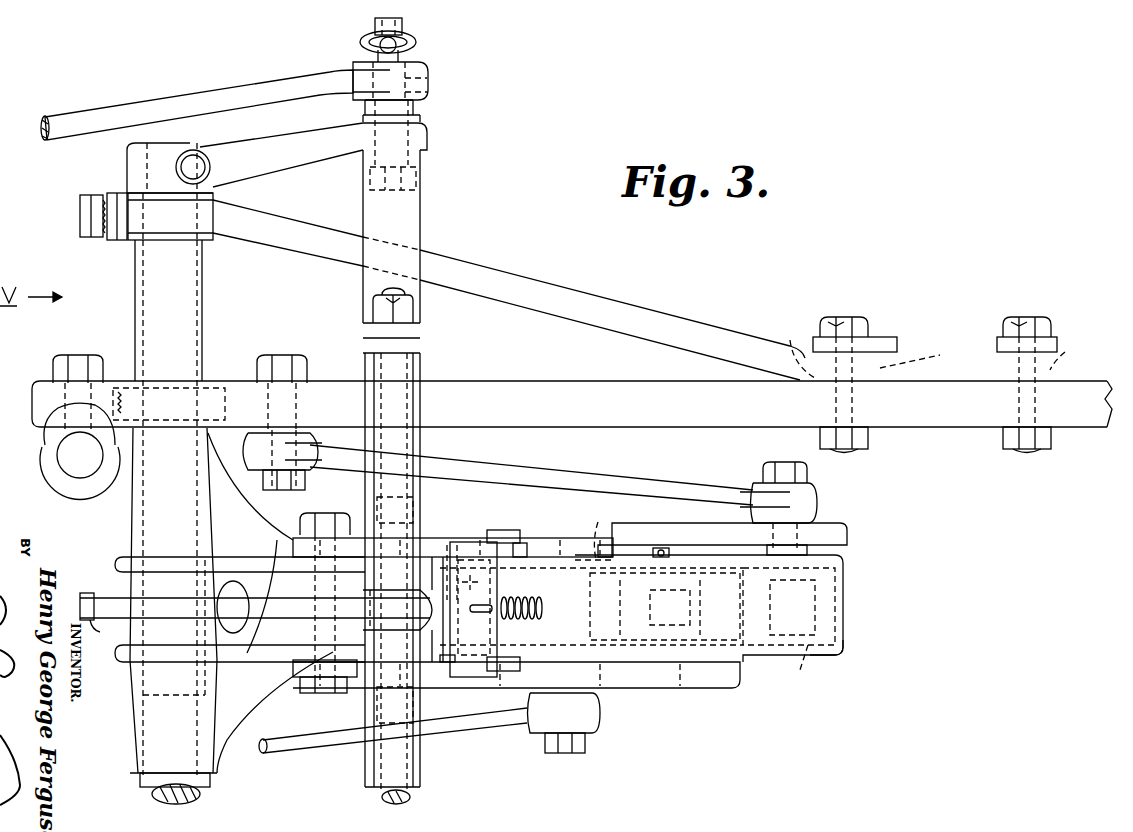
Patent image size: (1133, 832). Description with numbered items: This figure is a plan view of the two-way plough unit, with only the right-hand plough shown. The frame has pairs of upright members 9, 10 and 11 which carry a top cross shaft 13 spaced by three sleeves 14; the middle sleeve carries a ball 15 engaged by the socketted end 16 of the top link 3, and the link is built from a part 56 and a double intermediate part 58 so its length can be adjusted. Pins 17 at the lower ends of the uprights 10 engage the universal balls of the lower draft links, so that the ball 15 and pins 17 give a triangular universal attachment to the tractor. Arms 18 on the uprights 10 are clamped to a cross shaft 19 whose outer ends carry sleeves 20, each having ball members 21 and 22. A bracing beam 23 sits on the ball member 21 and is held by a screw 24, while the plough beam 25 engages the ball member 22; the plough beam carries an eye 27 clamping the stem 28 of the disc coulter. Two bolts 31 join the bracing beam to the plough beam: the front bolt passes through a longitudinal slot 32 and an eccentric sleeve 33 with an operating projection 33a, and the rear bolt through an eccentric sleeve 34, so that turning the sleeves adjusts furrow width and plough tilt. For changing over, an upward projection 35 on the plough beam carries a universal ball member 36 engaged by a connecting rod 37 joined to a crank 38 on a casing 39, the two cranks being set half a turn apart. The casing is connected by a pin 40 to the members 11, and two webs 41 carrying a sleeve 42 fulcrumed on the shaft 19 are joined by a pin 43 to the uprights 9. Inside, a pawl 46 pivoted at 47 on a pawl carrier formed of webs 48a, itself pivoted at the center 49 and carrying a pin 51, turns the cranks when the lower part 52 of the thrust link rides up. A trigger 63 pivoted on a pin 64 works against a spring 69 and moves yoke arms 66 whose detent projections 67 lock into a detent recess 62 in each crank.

The top link 3 is at (249, 690).
The upright member 9 is at (355, 692).
The upright member 10 is at (398, 218).
The upright member 11 is at (420, 548).
The top cross shaft 13 is at (411, 800).
The sleeve 14 is at (421, 364).
The ball 15 is at (425, 592).
The socketted end 16 is at (470, 545).
The pin 17 is at (430, 78).
The arm 18 is at (298, 120).
The cross shaft 19 is at (205, 793).
The sleeve 20 is at (203, 313).
The ball member 21 is at (215, 240).
The ball member 22 is at (215, 385).
The bracing beam 23 is at (330, 215).
The screw 24 is at (95, 238).
The plough beam 25 is at (520, 395).
The eye 27 is at (87, 487).
The stem 28 is at (72, 462).
The bolt 31 is at (862, 322).
The longitudinal slot 32 is at (920, 365).
The eccentric sleeve 33 is at (786, 340).
The operating projection 33a is at (895, 348).
The eccentric sleeve 34 is at (1060, 352).
The upward projection 35 is at (310, 393).
The universal ball member 36 is at (312, 438).
The connecting rod 37 is at (578, 487).
The crank 38 is at (652, 528).
The casing 39 is at (845, 650).
The pin 40 is at (663, 548).
The web 41 is at (275, 562).
The sleeve 42 is at (140, 718).
The pin 43 is at (295, 533).
The pawl 46 is at (845, 612).
The pivot 47 is at (240, 86).
The web 48a is at (845, 578).
The center pivot 49 is at (609, 530).
The pin 51 is at (571, 557).
The lower part 52 is at (452, 690).
The part 56 is at (298, 694).
The double intermediate part 58 is at (93, 622).
The detent recess 62 is at (848, 535).
The trigger 63 is at (485, 550).
The pin 64 is at (515, 538).
The arm 66 is at (495, 545).
The detent projection 67 is at (527, 550).
The spring 69 is at (542, 607).